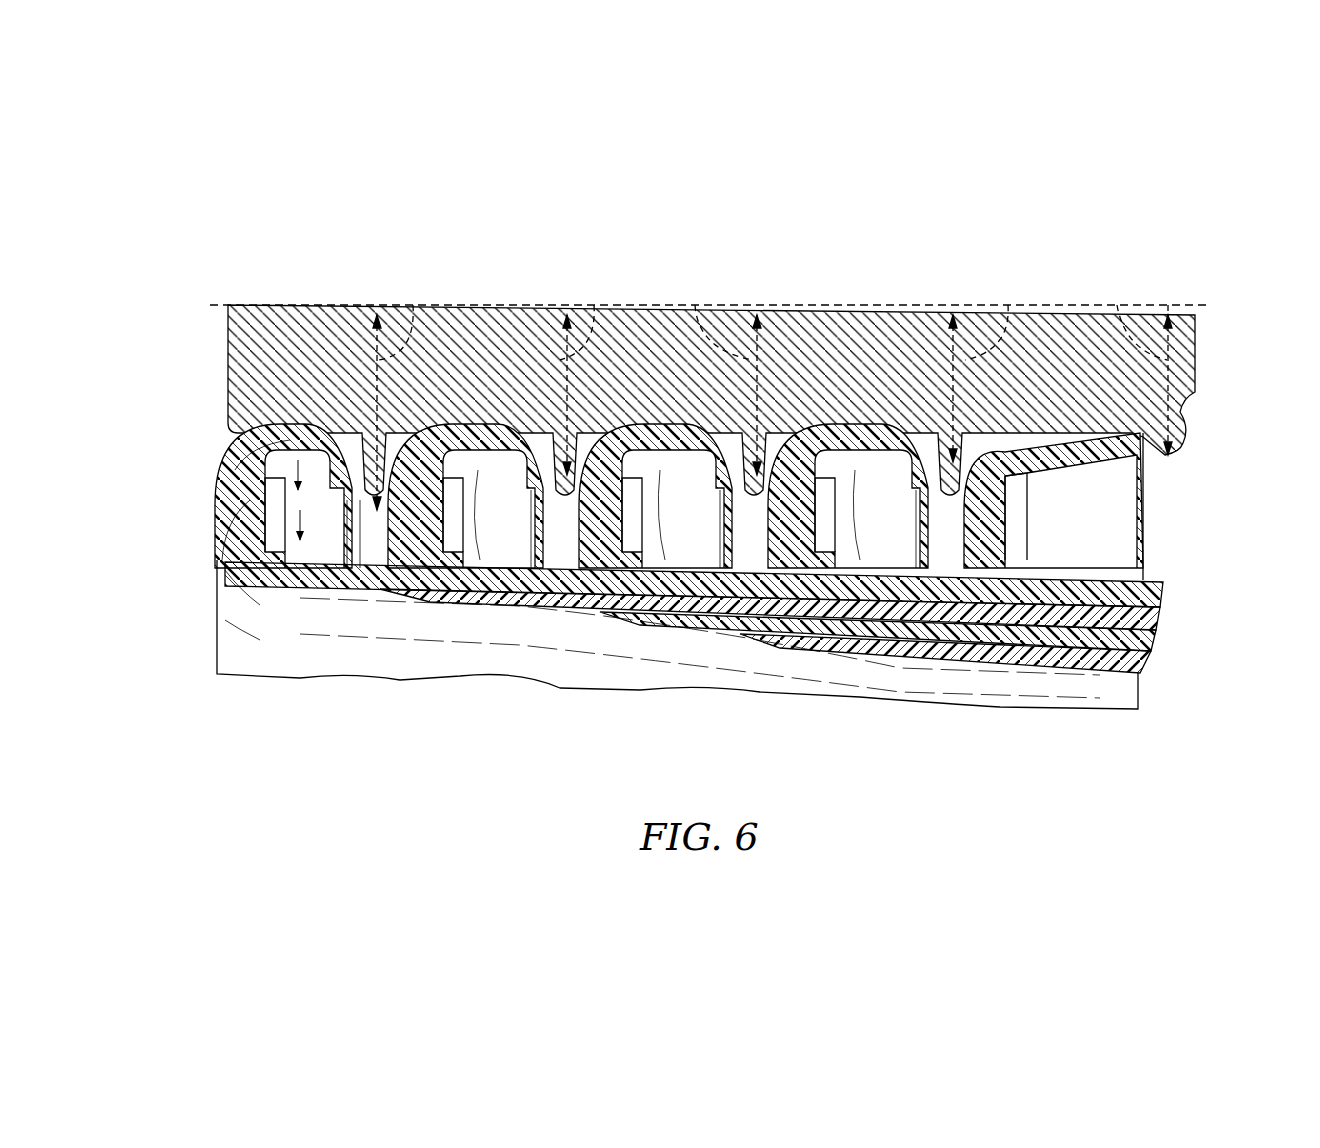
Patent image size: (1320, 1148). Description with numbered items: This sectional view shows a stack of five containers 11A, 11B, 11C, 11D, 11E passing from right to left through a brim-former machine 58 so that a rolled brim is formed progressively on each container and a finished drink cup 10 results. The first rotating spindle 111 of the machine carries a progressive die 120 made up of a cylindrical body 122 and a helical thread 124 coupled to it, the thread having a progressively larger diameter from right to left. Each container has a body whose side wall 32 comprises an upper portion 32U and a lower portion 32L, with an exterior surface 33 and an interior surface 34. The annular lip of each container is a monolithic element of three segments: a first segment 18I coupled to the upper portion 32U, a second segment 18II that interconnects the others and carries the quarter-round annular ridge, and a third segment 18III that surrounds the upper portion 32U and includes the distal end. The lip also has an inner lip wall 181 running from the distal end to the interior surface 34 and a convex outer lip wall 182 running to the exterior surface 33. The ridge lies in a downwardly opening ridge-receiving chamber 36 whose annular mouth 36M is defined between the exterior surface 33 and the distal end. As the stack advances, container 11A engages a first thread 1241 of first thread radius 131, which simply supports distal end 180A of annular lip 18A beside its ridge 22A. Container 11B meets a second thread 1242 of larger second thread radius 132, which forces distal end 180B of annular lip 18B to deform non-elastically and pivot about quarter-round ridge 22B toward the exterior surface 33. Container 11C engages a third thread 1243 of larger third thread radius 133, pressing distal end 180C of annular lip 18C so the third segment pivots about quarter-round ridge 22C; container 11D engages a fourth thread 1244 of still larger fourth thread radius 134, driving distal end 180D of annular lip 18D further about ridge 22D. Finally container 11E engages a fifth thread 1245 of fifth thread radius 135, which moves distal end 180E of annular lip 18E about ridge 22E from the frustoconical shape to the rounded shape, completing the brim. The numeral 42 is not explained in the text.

The drink cup 10 is at (216, 660).
The first container 11A is at (1180, 590).
The second container 11B is at (1180, 618).
The third container 11C is at (1170, 633).
The fourth container 11D is at (1153, 655).
The fifth container 11E is at (1153, 673).
The annular lip of first container 18A is at (1053, 506).
The annular lip of second container 18B is at (848, 496).
The annular lip of third container 18C is at (655, 496).
The annular lip of fourth container 18D is at (465, 570).
The annular lip of fifth container 18E is at (257, 411).
The first segment 18I is at (235, 525).
The second segment 18II is at (255, 452).
The third segment 18III is at (325, 500).
The annular ridge of first container 22A is at (1028, 478).
The quarter-round ridge of second container 22B is at (878, 462).
The quarter-round ridge of third container 22C is at (682, 462).
The quarter-round ridge of fourth container 22D is at (466, 555).
The annular ridge of fifth container 22E is at (268, 472).
The side wall 32 is at (893, 660).
The lower portion 32L is at (813, 637).
The upper portion 32U is at (322, 570).
The exterior surface 33 is at (760, 565).
The interior surface 34 is at (650, 575).
The ridge-receiving chamber 36 is at (300, 565).
The annular mouth 36M is at (372, 537).
The upper block 42 is at (980, 255).
The brim-former machine 58 is at (498, 300).
The first rotating spindle 111 is at (226, 356).
The progressive die 120 is at (892, 230).
The cylindrical body 122 is at (833, 257).
The helical thread 124 is at (790, 440).
The first thread radius 131 is at (1117, 305).
The second thread radius 132 is at (1008, 305).
The third thread radius 133 is at (695, 305).
The fourth thread radius 134 is at (594, 305).
The fifth thread radius 135 is at (413, 305).
The distal end of first container lip 180A is at (1147, 455).
The distal end of second container lip 180B is at (960, 540).
The distal end of third container lip 180C is at (700, 480).
The distal end of fourth container lip 180D is at (533, 540).
The distal end of fifth container lip 180E is at (348, 530).
The inner lip wall 181 is at (318, 480).
The outer lip wall 182 is at (225, 472).
The first thread 1241 is at (1167, 455).
The second thread 1242 is at (997, 428).
The third thread 1243 is at (780, 442).
The fourth thread 1244 is at (578, 437).
The fifth thread 1245 is at (408, 430).